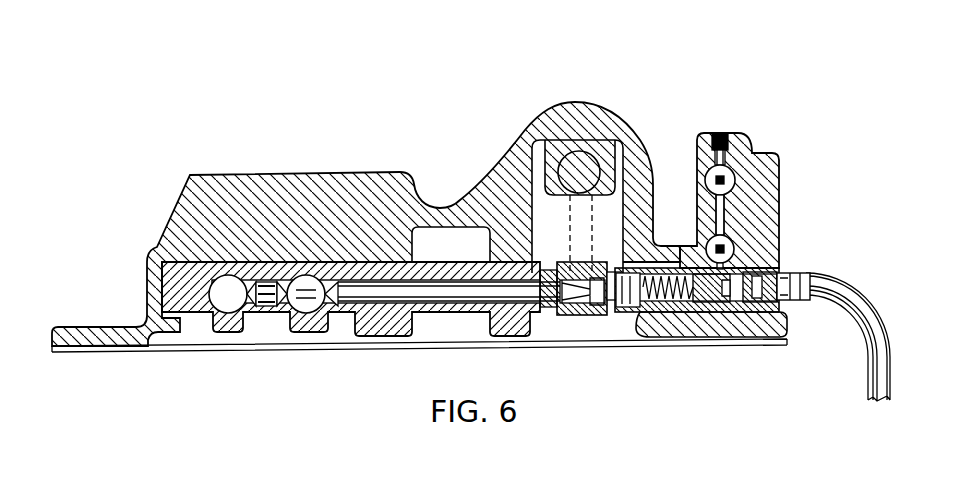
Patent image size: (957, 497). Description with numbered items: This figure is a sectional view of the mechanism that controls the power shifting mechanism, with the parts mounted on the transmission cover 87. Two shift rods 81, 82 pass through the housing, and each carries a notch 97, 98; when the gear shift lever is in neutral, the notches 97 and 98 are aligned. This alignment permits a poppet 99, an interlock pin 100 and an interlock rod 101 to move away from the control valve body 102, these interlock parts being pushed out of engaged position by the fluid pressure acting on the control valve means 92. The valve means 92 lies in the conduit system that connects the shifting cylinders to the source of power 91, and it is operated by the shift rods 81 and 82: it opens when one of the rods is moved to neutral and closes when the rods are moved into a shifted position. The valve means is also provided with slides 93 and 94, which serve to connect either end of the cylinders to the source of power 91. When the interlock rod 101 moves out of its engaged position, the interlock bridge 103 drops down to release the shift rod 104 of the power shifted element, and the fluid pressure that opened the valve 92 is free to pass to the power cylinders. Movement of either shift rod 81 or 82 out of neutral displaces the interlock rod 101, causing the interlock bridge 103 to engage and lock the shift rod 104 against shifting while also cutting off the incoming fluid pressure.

The transmission cover 87 is at (190, 201).
The shift rod 104 is at (583, 168).
The interlock bridge 103 is at (580, 248).
The slide 93 is at (703, 166).
The slide 94 is at (705, 240).
The control valve body 102 is at (763, 226).
The source of power 91 is at (883, 338).
The control valve means 92 is at (707, 288).
The interlock rod 101 is at (443, 290).
The shift rod 81 is at (225, 305).
The shift rod 82 is at (317, 307).
The notch 98 is at (262, 307).
The poppet 99 is at (268, 300).
The interlock pin 100 is at (307, 310).
The notch 97 is at (326, 300).